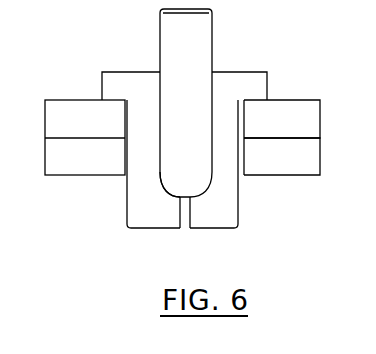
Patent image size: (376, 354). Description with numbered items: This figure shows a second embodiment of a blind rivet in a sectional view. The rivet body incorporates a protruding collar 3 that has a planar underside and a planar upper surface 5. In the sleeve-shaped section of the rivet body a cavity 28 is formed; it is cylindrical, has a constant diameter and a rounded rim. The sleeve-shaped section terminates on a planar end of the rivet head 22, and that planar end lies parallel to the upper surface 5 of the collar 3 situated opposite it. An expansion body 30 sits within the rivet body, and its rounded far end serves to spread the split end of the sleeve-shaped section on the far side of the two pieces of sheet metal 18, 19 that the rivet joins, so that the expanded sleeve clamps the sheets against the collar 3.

The upper surface 5 is at (138, 72).
The expansion body 30 is at (188, 40).
The cavity 28 is at (162, 157).
The rivet head 22 is at (220, 228).
The collar 3 is at (243, 88).
The piece of sheet metal 18 is at (312, 124).
The piece of sheet metal 19 is at (300, 158).